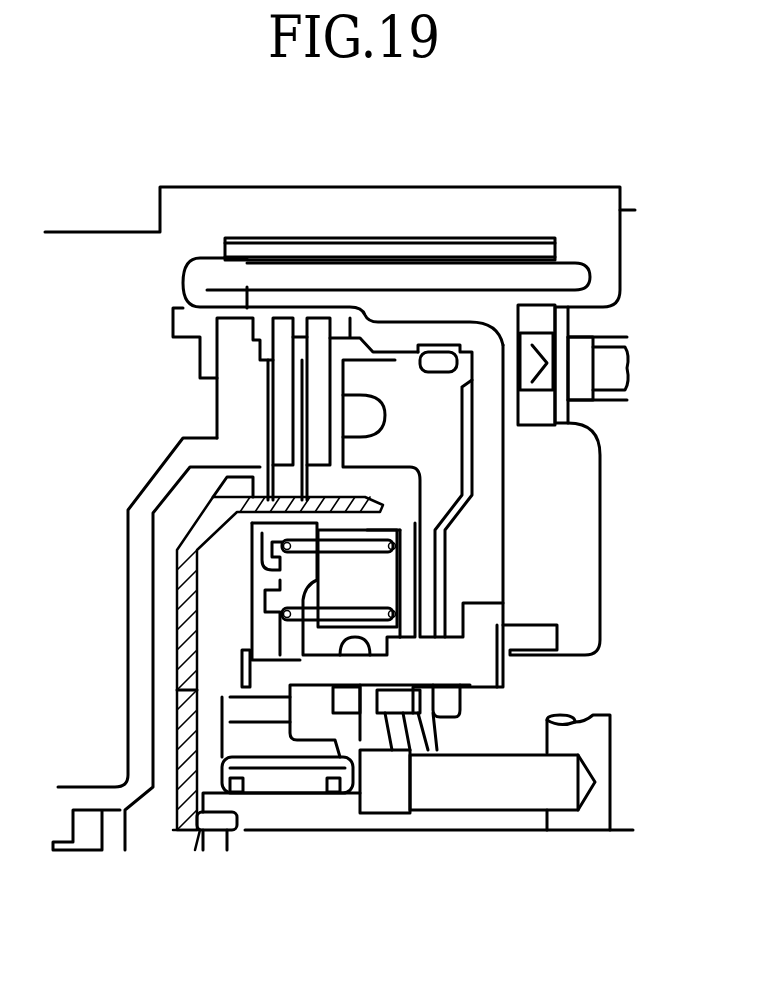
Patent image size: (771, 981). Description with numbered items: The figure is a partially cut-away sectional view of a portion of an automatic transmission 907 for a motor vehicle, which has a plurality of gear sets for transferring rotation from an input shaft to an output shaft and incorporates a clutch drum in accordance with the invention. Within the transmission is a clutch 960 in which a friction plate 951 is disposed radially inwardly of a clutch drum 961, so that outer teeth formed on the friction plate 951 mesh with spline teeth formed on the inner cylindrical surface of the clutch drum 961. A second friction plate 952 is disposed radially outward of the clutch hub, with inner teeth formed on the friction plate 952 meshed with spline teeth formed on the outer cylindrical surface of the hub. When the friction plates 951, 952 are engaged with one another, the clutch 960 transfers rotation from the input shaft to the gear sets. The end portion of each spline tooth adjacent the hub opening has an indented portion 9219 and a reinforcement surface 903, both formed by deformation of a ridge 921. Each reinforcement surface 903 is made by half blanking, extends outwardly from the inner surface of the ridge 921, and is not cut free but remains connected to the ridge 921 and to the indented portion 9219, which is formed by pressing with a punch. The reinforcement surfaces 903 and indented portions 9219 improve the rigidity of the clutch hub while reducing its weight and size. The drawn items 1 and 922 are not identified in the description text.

The vehicle body panel 1 is at (183, 690).
The automatic transmission 907 is at (433, 170).
The clutch 960 is at (250, 288).
The friction plate 951 is at (288, 322).
The clutch drum 961 is at (447, 337).
The friction plate 952 is at (263, 390).
The bracket member 922 is at (160, 460).
The ridge 921 is at (228, 447).
The indented portion 9219 is at (375, 493).
The reinforcement surface 903 is at (395, 497).